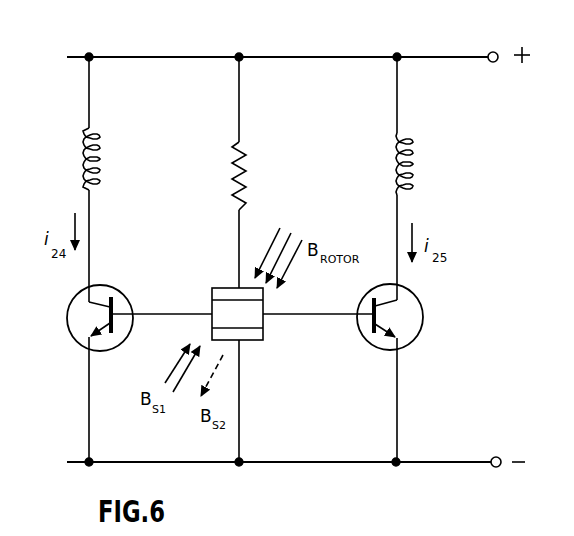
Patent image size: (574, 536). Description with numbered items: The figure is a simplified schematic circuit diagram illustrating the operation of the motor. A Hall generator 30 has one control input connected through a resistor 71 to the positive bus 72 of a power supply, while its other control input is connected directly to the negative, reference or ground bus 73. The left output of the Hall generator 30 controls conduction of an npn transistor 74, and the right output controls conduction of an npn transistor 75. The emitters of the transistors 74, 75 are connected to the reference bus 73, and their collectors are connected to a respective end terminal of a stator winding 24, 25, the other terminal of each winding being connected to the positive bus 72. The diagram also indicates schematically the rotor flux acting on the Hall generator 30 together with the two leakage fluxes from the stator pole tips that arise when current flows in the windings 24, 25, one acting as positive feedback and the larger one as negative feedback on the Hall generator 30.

The stator winding 24 is at (100, 140).
The stator winding 25 is at (412, 142).
The Hall generator 30 is at (256, 320).
The resistor 71 is at (243, 172).
The positive bus 72 is at (328, 57).
The negative bus 73 is at (310, 462).
The npn transistor 74 is at (75, 320).
The npn transistor 75 is at (418, 320).